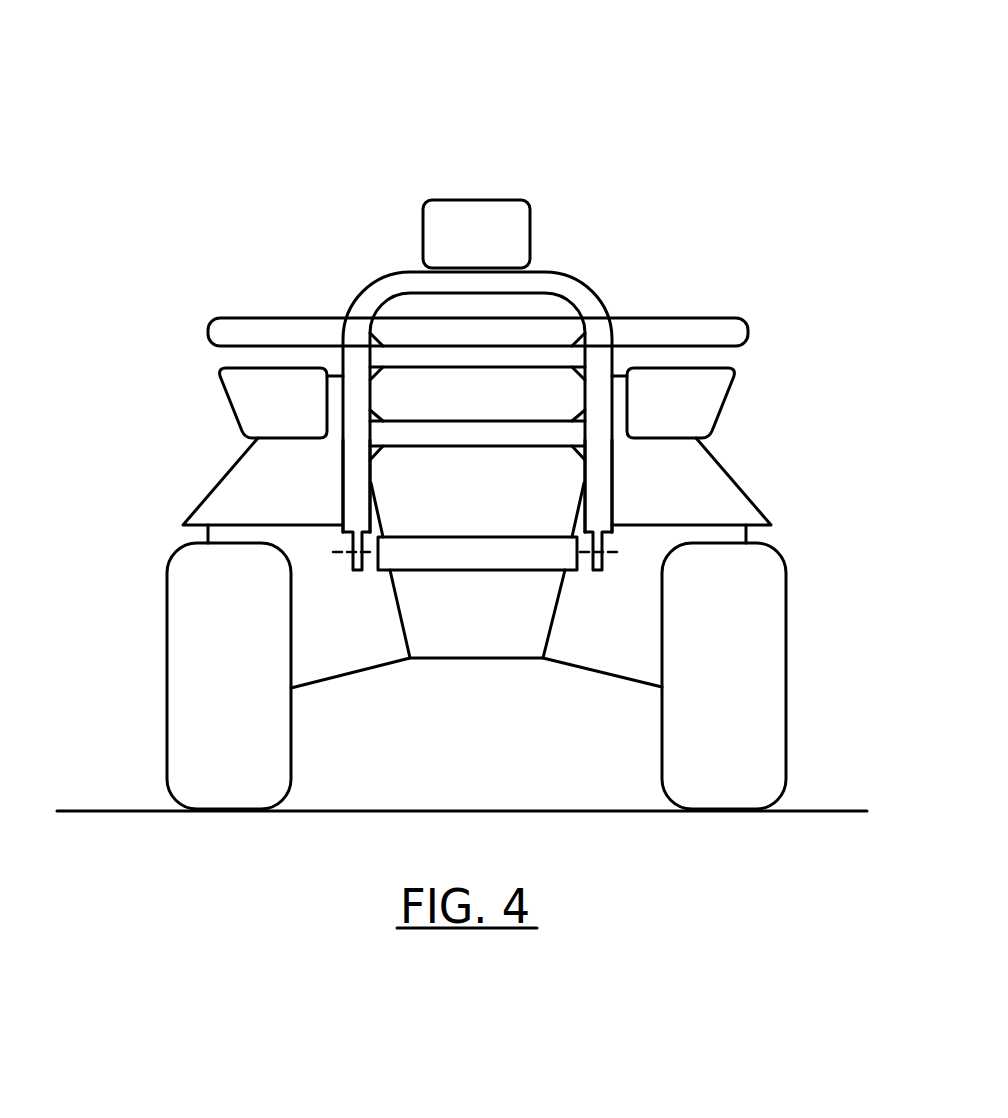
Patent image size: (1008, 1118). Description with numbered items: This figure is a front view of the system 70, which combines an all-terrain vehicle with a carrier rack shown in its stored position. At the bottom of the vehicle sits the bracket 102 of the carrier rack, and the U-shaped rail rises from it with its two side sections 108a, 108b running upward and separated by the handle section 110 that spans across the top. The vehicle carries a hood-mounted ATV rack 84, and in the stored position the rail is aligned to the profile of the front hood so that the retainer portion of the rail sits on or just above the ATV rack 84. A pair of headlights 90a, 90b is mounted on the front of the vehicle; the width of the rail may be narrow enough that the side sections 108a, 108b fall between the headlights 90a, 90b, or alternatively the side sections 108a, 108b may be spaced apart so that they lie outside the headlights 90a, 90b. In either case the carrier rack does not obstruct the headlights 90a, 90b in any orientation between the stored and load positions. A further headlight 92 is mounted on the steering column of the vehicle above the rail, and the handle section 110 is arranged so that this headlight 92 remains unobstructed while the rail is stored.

The system 70 is at (410, 28).
The ATV rack 84 is at (252, 306).
The headlight 92 is at (462, 200).
The handle section 110 is at (586, 289).
The headlight 90a is at (233, 410).
The headlight 90b is at (720, 405).
The side section 108a is at (343, 497).
The side section 108b is at (613, 493).
The bracket 102 is at (497, 535).